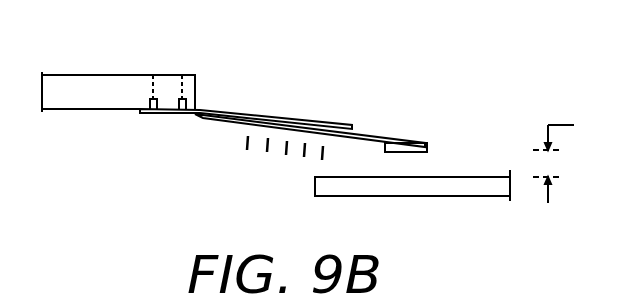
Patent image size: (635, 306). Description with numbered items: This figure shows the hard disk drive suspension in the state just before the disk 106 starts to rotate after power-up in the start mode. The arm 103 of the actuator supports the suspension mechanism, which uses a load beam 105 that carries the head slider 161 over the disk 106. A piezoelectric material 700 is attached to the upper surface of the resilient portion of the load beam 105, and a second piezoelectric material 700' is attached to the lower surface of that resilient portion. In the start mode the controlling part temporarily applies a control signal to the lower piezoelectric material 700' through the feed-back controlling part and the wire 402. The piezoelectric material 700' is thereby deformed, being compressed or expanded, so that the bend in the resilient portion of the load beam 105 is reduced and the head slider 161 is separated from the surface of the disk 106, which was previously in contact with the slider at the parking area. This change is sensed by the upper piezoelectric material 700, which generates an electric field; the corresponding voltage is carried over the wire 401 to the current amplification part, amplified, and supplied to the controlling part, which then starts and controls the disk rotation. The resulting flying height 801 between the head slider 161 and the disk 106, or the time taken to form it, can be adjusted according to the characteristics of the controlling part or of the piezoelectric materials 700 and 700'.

The arm 103 is at (78, 97).
The piezoelectric material 700 is at (246, 93).
The load beam 105 is at (382, 133).
The head slider 161 is at (428, 150).
The disk 106 is at (480, 188).
The wire 401 is at (233, 110).
The wire 402 is at (232, 123).
The piezoelectric material 700' is at (275, 170).
The flying height 801 is at (578, 156).